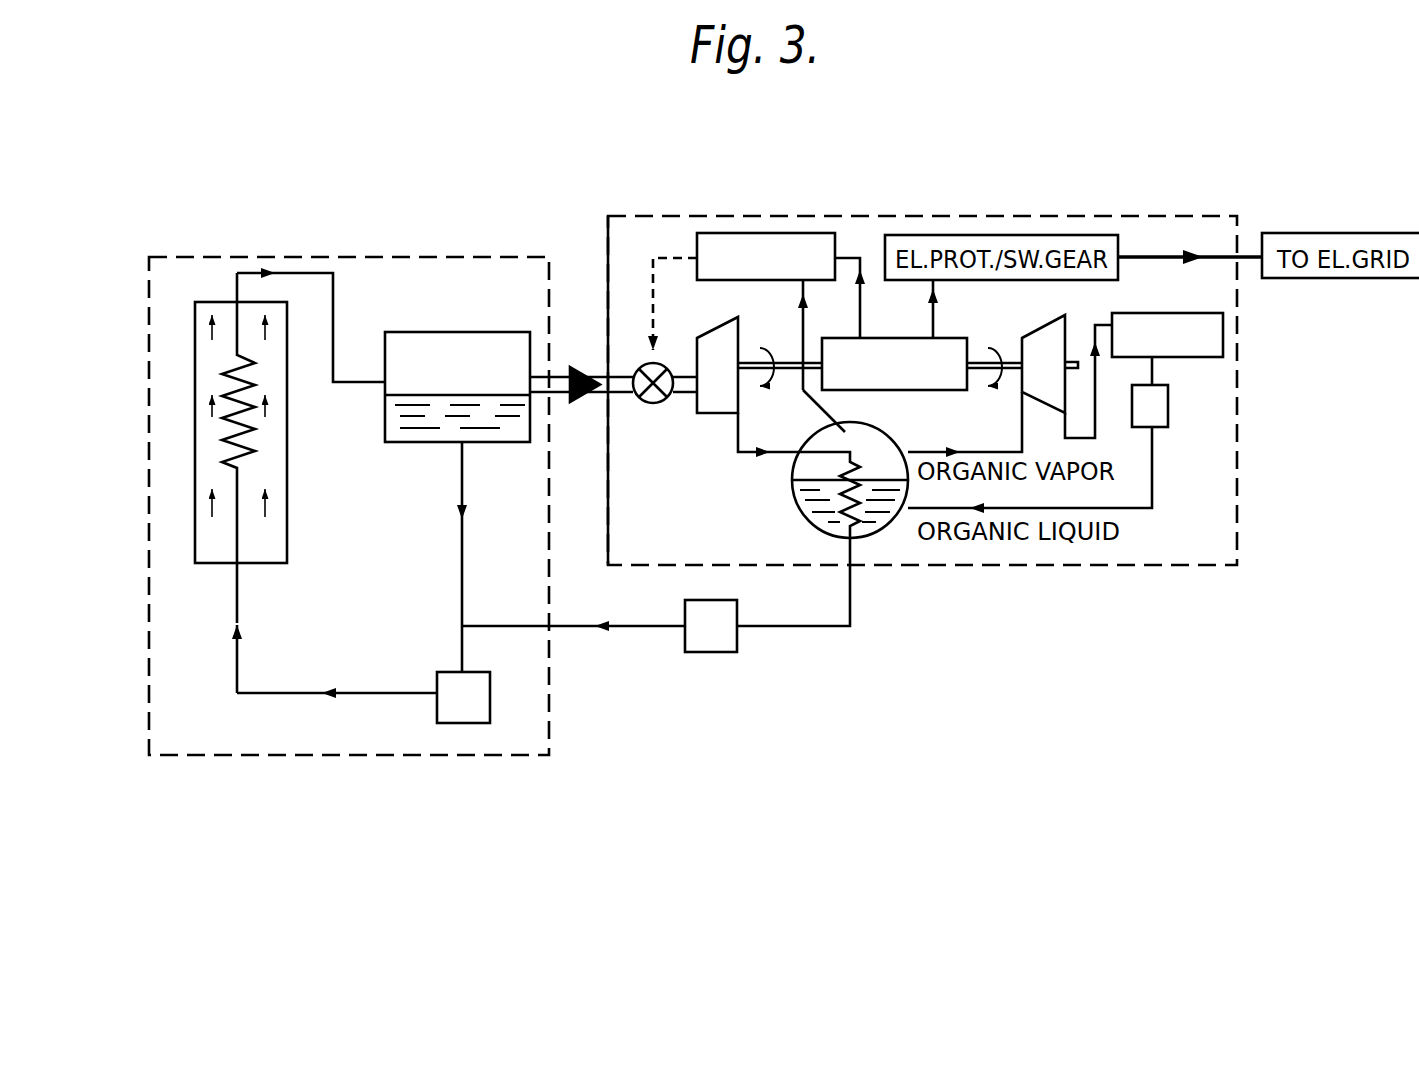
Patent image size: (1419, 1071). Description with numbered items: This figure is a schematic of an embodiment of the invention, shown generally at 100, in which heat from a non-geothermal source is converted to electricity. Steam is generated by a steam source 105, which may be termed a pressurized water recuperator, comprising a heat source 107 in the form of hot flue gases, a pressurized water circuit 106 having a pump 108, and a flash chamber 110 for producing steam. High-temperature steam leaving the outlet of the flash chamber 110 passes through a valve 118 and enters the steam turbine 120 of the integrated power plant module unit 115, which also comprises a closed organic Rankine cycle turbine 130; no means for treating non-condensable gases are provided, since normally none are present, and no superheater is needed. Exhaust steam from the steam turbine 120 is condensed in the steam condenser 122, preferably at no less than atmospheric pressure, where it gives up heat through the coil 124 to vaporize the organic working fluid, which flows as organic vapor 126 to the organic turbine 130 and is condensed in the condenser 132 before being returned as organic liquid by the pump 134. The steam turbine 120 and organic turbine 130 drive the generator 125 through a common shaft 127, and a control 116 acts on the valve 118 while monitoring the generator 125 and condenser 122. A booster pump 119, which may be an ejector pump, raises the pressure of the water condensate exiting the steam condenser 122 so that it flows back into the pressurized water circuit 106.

The organic Rankine cycle power plant 100 is at (752, 203).
The steam source 105 is at (212, 764).
The pressurized water circuit 106 is at (237, 672).
The heat source 107 is at (278, 458).
The pump 108 is at (437, 682).
The flash chamber 110 is at (424, 332).
The integrated power plant module unit 115 is at (606, 265).
The control unit 116 is at (697, 245).
The steam control valve 118 is at (655, 404).
The booster pump 119 is at (685, 610).
The steam turbine 120 is at (712, 328).
The steam condenser 122 is at (808, 466).
The heat exchanger coil 124 is at (855, 560).
The generator 125 is at (893, 338).
The organic vapor line 126 is at (887, 437).
The shaft 127 is at (1011, 385).
The closed organic Rankine cycle turbine 130 is at (1032, 320).
The condenser 132 is at (1175, 313).
The organic liquid pump 134 is at (1168, 400).